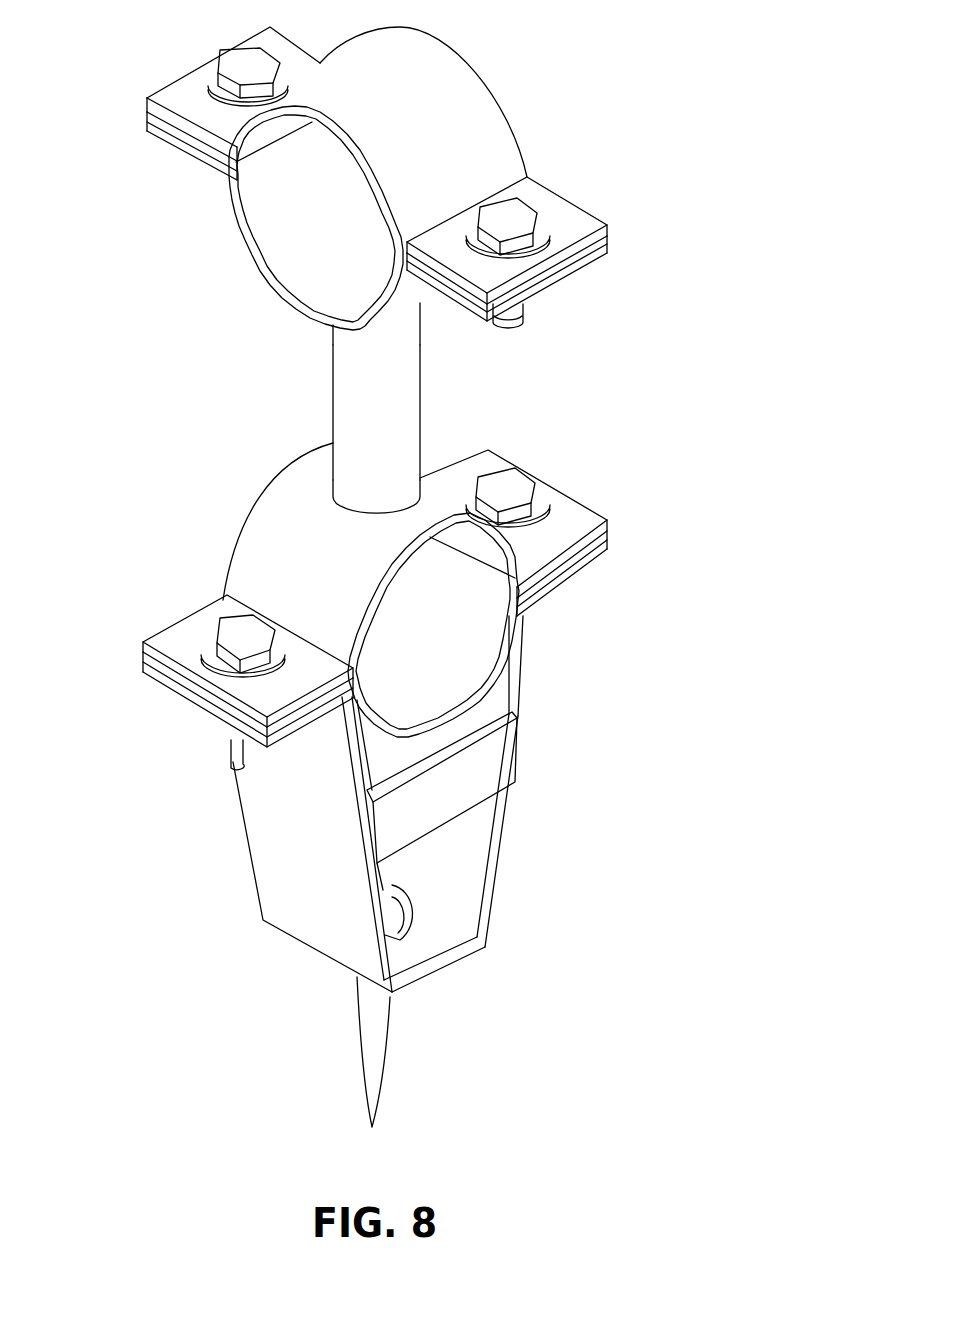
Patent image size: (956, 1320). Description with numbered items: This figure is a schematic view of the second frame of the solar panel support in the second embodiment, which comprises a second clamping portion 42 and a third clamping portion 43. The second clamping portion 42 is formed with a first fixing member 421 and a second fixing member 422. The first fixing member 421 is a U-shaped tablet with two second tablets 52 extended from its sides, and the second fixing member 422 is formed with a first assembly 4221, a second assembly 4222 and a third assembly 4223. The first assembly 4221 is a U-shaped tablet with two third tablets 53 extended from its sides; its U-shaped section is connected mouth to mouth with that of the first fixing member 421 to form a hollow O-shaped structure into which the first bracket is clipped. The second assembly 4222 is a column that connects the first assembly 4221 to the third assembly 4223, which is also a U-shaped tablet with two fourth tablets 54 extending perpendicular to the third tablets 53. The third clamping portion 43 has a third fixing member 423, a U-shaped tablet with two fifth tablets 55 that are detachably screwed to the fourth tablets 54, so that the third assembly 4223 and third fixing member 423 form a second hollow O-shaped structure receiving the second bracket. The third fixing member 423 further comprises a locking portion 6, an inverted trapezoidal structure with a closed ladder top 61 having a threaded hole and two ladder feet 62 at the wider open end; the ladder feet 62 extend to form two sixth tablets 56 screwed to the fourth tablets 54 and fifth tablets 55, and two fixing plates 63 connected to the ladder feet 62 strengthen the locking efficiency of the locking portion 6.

The second clamping portion 42 is at (416, 178).
The first fixing member 421 is at (417, 73).
The second fixing member 422 is at (137, 287).
The first assembly 4221 is at (247, 244).
The second assembly 4222 is at (330, 383).
The third assembly 4223 is at (303, 500).
The third fixing member 423 is at (502, 665).
The third clamping portion 43 is at (225, 530).
The second tablets 52 is at (187, 95).
The third tablets 53 is at (160, 133).
The fourth tablets 54 is at (572, 505).
The fifth tablets 55 is at (603, 543).
The sixth tablets 56 is at (172, 707).
The locking portion 6 is at (369, 912).
The ladder top 61 is at (463, 953).
The ladder feet 62 is at (490, 907).
The fixing plates 63 is at (442, 787).